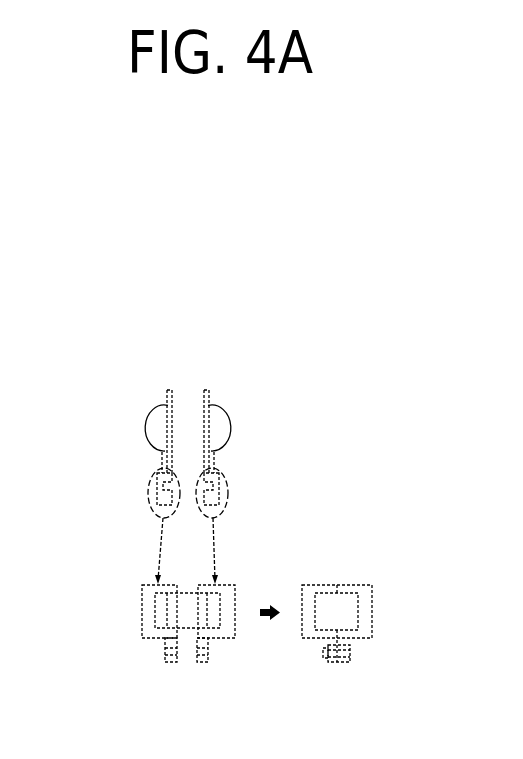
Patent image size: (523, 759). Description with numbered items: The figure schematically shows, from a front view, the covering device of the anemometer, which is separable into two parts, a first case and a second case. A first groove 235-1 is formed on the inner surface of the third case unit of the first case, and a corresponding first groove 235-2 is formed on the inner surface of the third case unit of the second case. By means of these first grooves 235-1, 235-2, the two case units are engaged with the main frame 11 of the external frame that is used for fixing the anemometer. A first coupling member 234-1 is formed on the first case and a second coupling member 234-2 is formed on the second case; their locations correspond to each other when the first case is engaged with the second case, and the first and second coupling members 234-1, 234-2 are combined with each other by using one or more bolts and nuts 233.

The main frame 11 is at (167, 629).
The bolts and nuts 233 is at (350, 652).
The first coupling member 234-1 is at (170, 662).
The second coupling member 234-2 is at (202, 663).
The first groove 235-1 is at (168, 487).
The first groove 235-2 is at (207, 487).